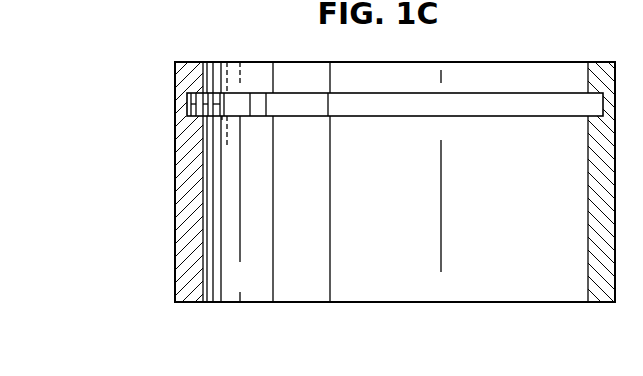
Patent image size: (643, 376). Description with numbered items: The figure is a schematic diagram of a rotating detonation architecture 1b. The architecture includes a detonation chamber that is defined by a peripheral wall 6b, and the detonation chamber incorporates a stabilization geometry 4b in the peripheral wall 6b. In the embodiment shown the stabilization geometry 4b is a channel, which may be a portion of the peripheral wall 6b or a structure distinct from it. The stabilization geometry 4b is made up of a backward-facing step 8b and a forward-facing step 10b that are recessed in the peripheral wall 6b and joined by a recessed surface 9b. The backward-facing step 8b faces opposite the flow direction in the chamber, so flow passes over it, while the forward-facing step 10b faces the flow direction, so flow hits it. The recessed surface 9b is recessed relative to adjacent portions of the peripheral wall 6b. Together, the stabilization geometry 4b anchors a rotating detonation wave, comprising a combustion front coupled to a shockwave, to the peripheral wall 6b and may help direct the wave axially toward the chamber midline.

The rotating detonation architecture 1b is at (107, 107).
The stabilization geometry 4b is at (522, 106).
The peripheral wall 6b is at (367, 249).
The backward-facing step 8b is at (217, 90).
The recessed surface 9b is at (258, 103).
The forward-facing step 10b is at (222, 118).